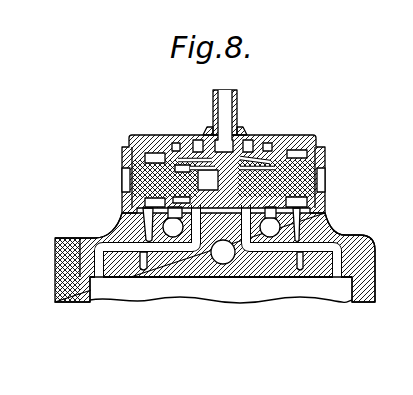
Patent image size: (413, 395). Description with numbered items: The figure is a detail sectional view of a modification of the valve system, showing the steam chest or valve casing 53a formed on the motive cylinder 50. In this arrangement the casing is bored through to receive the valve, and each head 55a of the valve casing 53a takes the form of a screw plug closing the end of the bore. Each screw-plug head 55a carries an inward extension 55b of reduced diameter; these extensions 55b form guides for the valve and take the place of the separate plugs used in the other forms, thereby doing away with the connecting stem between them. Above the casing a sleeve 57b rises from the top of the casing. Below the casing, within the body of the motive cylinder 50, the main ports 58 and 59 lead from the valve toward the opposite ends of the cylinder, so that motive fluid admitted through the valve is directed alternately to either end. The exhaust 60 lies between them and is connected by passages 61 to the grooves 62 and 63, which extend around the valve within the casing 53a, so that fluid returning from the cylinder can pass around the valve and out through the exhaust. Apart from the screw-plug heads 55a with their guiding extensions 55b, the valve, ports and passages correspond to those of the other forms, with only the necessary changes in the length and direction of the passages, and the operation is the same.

The motive cylinder 50 is at (201, 258).
The valve casing 53a is at (310, 134).
The head 55a is at (338, 177).
The inward extension 55b is at (180, 140).
The stem sleeve 57b is at (226, 98).
The main port 58 is at (98, 268).
The main port 59 is at (341, 262).
The exhaust 60 is at (223, 253).
The passage 61 is at (182, 262).
The groove 62 is at (178, 141).
The groove 63 is at (272, 143).